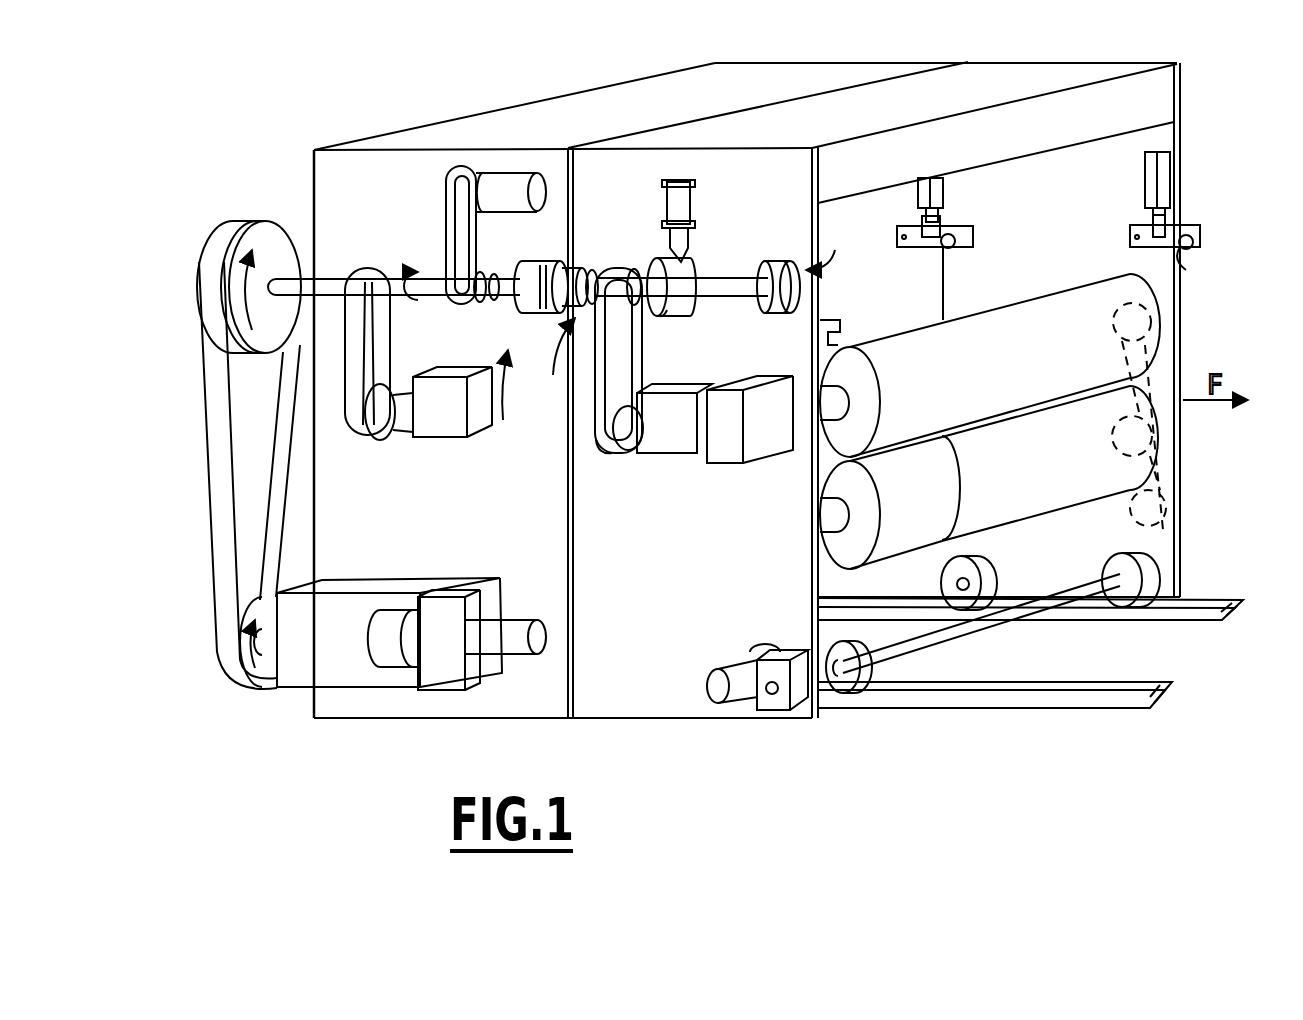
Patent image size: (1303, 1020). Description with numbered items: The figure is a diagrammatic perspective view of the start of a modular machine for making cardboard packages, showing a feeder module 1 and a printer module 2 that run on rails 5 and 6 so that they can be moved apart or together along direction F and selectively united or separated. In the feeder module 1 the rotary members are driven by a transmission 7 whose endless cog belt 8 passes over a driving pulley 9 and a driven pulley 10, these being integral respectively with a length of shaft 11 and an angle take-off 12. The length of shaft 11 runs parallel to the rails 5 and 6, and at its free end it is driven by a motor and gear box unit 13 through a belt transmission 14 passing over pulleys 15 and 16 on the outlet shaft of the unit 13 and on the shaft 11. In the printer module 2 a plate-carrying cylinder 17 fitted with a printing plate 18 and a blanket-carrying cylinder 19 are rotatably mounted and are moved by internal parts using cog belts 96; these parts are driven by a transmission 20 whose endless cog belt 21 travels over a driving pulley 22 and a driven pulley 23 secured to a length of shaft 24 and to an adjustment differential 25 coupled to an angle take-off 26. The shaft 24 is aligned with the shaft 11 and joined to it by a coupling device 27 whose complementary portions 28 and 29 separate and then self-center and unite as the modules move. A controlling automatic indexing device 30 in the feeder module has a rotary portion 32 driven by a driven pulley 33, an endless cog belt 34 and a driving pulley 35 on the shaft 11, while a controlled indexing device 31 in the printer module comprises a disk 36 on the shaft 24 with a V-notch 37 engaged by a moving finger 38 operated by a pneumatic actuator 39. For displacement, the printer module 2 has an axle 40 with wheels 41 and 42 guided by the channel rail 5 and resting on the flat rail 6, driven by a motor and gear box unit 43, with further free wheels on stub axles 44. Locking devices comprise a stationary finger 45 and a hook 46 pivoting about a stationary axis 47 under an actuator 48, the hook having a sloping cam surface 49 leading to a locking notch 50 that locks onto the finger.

The feeder module 1 is at (747, 366).
The printer module 2 is at (968, 100).
The rail 5 is at (1160, 684).
The rail 6 is at (1222, 600).
The transmission 7 is at (515, 398).
The endless cog belt 8 is at (355, 360).
The driving pulley 9 is at (390, 270).
The driven pulley 10 is at (393, 432).
The length of shaft 11 is at (437, 292).
The angle take-off 12 is at (457, 422).
The motor and gear box unit 13 is at (410, 594).
The belt transmission 14 is at (213, 465).
The pulley 15 is at (262, 682).
The pulley 16 is at (278, 235).
The plate-carrying cylinder 17 is at (885, 492).
The printing plate 18 is at (1002, 477).
The blanket-carrying cylinder 19 is at (962, 384).
The transmission 20 is at (645, 358).
The endless cog belt 21 is at (606, 450).
The driving pulley 22 is at (637, 270).
The driven pulley 23 is at (630, 450).
The length of shaft 24 is at (742, 297).
The adjustment differential 25 is at (682, 455).
The angle take-off 26 is at (745, 465).
The coupling device 27 is at (559, 278).
The complementary portion 28 is at (538, 318).
The complementary portion 29 is at (692, 309).
The controlling automatic indexing device 30 is at (472, 221).
The controlled indexing device 31 is at (723, 206).
The rotary portion 32 is at (518, 183).
The driven pulley 33 is at (470, 170).
The endless cog belt 34 is at (470, 236).
The driving pulley 35 is at (472, 305).
The disk 36 is at (668, 312).
The V-notch 37 is at (690, 262).
The moving finger 38 is at (690, 235).
The pneumatic actuator 39 is at (690, 188).
The axle 40 is at (976, 645).
The wheel 41 is at (843, 700).
The wheel 42 is at (988, 588).
The motor and gear box unit 43 is at (778, 630).
The stub axle 44 is at (956, 584).
The stationary finger 45 is at (955, 247).
The hook 46 is at (830, 320).
The stationary axis 47 is at (1130, 236).
The actuator 48 is at (1145, 181).
The sloping cam surface 49 is at (1195, 245).
The locking notch 50 is at (1188, 250).
The cog belts 96 is at (1183, 474).